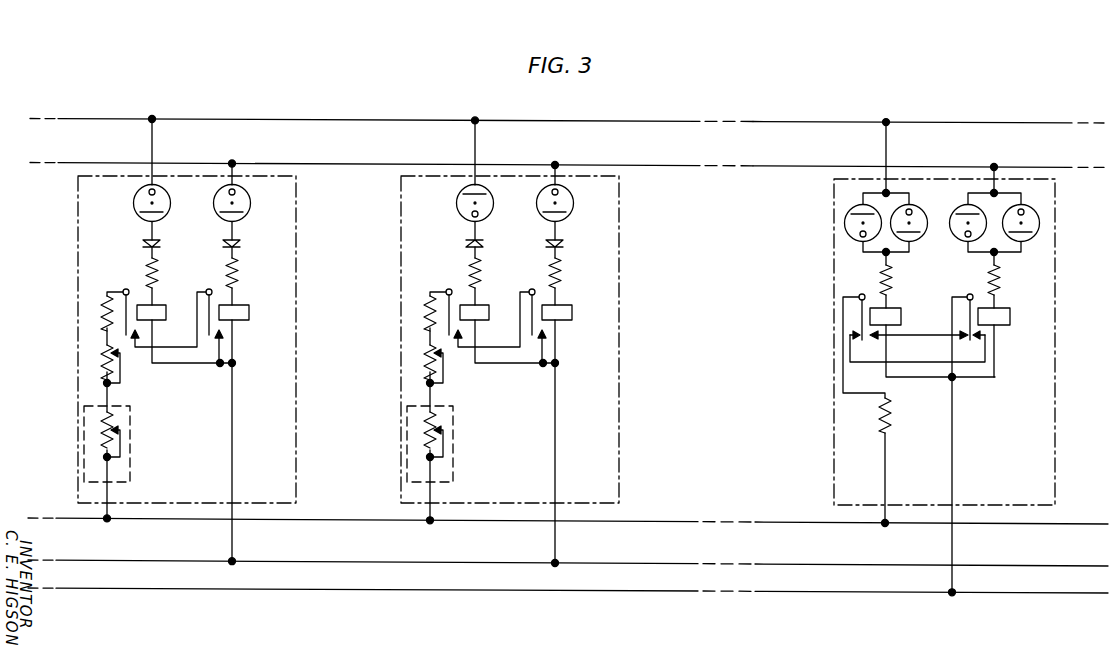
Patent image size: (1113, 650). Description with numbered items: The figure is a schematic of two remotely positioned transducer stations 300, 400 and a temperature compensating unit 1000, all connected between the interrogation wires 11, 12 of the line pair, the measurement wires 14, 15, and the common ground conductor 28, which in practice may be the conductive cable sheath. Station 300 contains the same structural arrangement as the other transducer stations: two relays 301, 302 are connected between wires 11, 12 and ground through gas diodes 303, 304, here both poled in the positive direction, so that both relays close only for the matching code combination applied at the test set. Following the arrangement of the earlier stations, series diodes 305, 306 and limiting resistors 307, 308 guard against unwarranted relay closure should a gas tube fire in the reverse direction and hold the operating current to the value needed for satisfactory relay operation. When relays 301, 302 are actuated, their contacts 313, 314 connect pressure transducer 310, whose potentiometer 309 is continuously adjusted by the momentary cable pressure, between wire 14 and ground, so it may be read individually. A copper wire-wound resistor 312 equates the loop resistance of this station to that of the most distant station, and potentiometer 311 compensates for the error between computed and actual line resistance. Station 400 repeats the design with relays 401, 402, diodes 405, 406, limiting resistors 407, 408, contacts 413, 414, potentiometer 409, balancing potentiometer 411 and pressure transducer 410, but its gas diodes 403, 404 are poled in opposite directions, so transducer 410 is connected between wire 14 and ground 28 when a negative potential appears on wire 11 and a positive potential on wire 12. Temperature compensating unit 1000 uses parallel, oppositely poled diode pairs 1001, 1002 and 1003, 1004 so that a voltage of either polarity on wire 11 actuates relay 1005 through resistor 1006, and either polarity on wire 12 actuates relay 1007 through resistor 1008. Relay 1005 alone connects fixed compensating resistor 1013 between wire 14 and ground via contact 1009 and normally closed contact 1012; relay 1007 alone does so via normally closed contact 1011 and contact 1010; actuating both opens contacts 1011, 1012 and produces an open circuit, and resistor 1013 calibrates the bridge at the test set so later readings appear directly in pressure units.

The wire 11 is at (594, 120).
The wire 12 is at (595, 165).
The wire 14 is at (633, 522).
The wire 15 is at (631, 564).
The ground conductor 28 is at (627, 591).
The transducer station 300 is at (78, 282).
The relay 301 is at (152, 305).
The relay 302 is at (246, 310).
The diode 303 is at (135, 198).
The diode 304 is at (250, 199).
The rectifier diode 305 is at (143, 244).
The rectifier diode 306 is at (245, 247).
The resistor 307 is at (146, 275).
The resistor 308 is at (246, 279).
The transducer potentiometer 309 is at (117, 430).
The transducer 310 is at (123, 488).
The potentiometer 311 is at (121, 384).
The resistor 312 is at (100, 322).
The relay contact 313 is at (130, 342).
The relay contact 314 is at (215, 342).
The transducer station 400 is at (484, 339).
The relay coil 401 is at (490, 297).
The relay coil 402 is at (575, 306).
The diode 403 is at (452, 202).
The diode 404 is at (575, 202).
The rectifier diode 405 is at (450, 236).
The rectifier diode 406 is at (577, 236).
The resistor 407 is at (448, 273).
The resistor 408 is at (579, 273).
The transducer potentiometer 409 is at (460, 436).
The transducer 410 is at (468, 452).
The balancing potentiometer 411 is at (457, 350).
The relay contact 413 is at (487, 329).
The relay contact 414 is at (563, 326).
The temperature compensating unit 1000 is at (834, 281).
The diode 1001 is at (854, 240).
The diode 1002 is at (911, 211).
The diode 1003 is at (958, 238).
The diode 1004 is at (1025, 209).
The relay 1005 is at (891, 310).
The resistor 1006 is at (892, 281).
The relay 1007 is at (1000, 310).
The resistor 1008 is at (1000, 281).
The contact 1009 is at (868, 342).
The contact 1010 is at (985, 342).
The normally closed contact 1011 is at (850, 335).
The normally closed contact 1012 is at (962, 338).
The compensating resistor 1013 is at (890, 424).